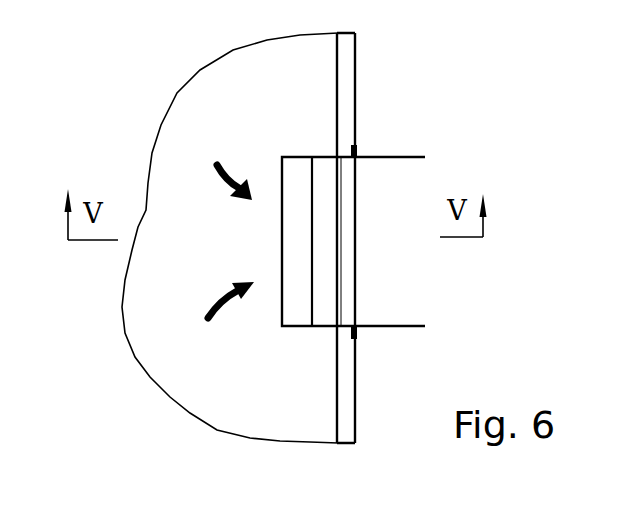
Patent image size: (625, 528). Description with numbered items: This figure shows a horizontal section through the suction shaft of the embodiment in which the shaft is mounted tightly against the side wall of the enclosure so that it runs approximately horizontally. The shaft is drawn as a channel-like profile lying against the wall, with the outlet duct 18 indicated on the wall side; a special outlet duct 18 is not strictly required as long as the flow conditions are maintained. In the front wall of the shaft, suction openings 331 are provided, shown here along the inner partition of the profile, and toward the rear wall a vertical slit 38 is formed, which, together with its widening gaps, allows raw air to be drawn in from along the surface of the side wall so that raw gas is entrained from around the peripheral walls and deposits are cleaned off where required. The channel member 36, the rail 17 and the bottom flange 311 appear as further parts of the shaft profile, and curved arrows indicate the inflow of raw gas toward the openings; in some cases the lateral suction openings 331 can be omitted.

The rail 17 is at (348, 273).
The outlet duct 18 is at (412, 194).
The channel bracket 36 is at (292, 300).
The vertical slit 38 is at (338, 290).
The bottom flange 311 is at (317, 338).
The suction openings 331 is at (312, 258).